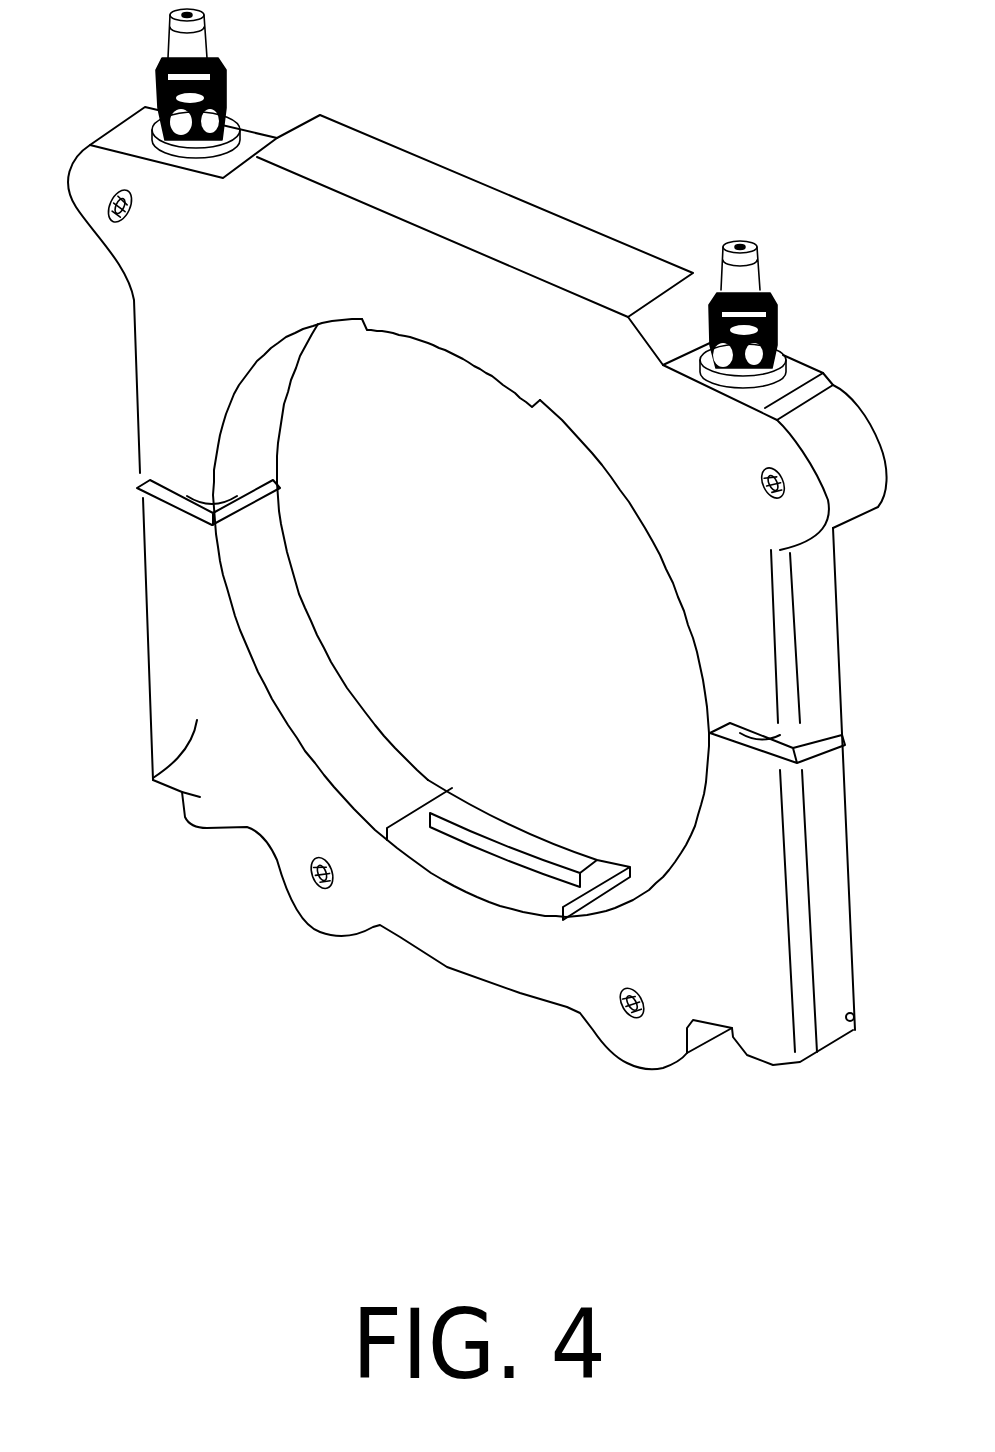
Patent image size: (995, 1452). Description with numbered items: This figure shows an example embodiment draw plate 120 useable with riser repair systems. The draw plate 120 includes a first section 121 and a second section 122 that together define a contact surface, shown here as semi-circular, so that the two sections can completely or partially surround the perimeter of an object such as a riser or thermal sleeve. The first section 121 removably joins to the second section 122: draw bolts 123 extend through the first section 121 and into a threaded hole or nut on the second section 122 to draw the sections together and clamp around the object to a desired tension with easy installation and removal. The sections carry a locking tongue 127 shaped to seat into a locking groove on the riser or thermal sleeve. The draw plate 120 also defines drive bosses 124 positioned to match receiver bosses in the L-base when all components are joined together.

The draw plate 120 is at (692, 108).
The first section 121 is at (388, 253).
The second section 122 is at (153, 780).
The draw bolts 123 is at (167, 37).
The drive bosses 124 is at (110, 208).
The locking tongue 127 is at (447, 350).